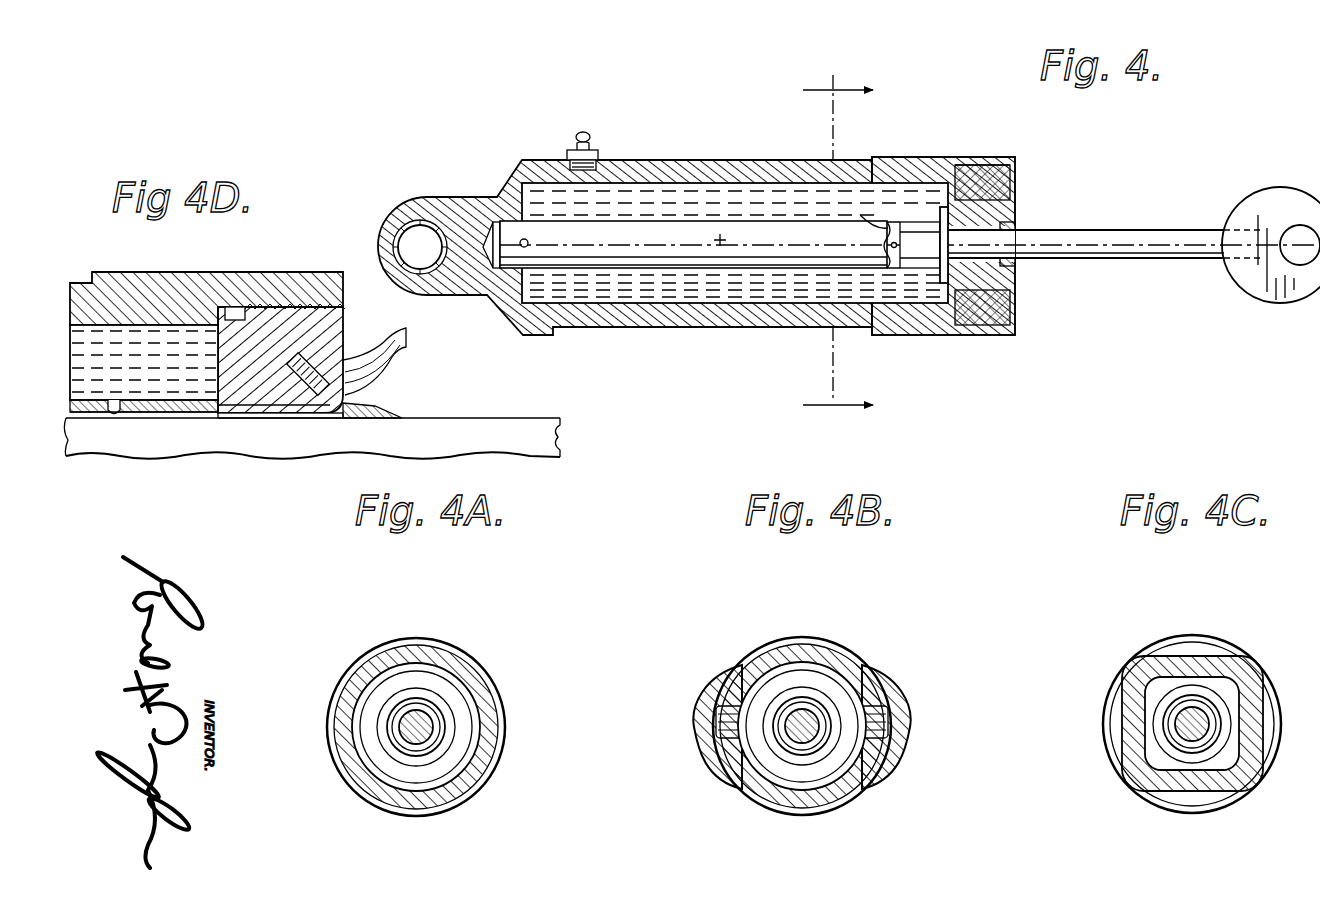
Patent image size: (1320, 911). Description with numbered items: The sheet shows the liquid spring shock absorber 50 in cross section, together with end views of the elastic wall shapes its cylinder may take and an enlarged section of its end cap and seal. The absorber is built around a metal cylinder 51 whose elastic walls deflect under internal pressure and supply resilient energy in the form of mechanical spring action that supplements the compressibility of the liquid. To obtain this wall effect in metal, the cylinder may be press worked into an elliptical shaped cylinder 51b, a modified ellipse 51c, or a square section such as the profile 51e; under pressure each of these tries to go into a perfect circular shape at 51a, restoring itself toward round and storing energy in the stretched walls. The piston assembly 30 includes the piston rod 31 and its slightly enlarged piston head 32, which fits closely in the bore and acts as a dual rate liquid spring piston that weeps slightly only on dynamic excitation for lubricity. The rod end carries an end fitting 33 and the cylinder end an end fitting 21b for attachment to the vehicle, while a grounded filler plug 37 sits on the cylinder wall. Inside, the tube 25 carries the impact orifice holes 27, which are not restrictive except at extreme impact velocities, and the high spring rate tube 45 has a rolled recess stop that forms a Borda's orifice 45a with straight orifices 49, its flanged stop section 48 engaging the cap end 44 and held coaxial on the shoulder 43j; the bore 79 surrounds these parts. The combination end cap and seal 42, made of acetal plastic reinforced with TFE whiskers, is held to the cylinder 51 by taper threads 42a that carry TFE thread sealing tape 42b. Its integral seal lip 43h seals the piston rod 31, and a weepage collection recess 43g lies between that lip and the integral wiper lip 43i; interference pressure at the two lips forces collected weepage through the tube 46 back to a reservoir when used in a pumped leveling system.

In FIG. 4, the liquid spring shock absorber 50 is at (648, 120).
In FIG. 4A, the liquid spring shock absorber 50 is at (424, 699).
In FIG. 4B, the liquid spring shock absorber 50 is at (810, 699).
In FIG. 4C, the liquid spring shock absorber 50 is at (1187, 695).
In FIG. 4, the cylinder 51 is at (918, 330).
In FIG. 4D, the cylinder 51 is at (138, 290).
In FIG. 4, the circular cross section 51a is at (637, 330).
In FIG. 4A, the elliptical shaped cylinder 51b is at (378, 660).
In FIG. 4B, the modified ellipse cylinder 51c is at (760, 668).
In FIG. 4C, the square cylinder body profile 51e is at (1150, 665).
In FIG. 4, the end cap and seal 42 is at (1035, 208).
In FIG. 4D, the end cap and seal 42 is at (370, 388).
In FIG. 4D, the taper threads 42a is at (318, 310).
In FIG. 4D, the TFE thread sealing tape 42b is at (292, 308).
In FIG. 4, the end fitting 21b is at (417, 200).
In FIG. 4, the impact orifice holes 27 is at (528, 240).
In FIG. 4, the piston assembly 30 is at (1227, 225).
In FIG. 4, the piston rod 31 is at (1128, 248).
In FIG. 4D, the piston rod 31 is at (558, 437).
In FIG. 4A, the piston rod 31 is at (432, 724).
In FIG. 4B, the piston rod 31 is at (828, 710).
In FIG. 4C, the piston rod 31 is at (1230, 708).
In FIG. 4, the piston head 32 is at (718, 242).
In FIG. 4, the end fitting 33 is at (1313, 170).
In FIG. 4, the filler plug 37 is at (572, 150).
In FIG. 4, the cap end 44 is at (980, 158).
In FIG. 4D, the cap end 44 is at (268, 305).
In FIG. 4, the high spring rate tube 45 is at (632, 284).
In FIG. 4D, the high spring rate tube 45 is at (86, 395).
In FIG. 4, the Borda's orifice 45a is at (855, 210).
In FIG. 4D, the Borda's orifice 45a is at (118, 408).
In FIG. 4D, the tube 46 is at (382, 327).
In FIG. 4, the flanged stop section 48 is at (946, 208).
In FIG. 4D, the flanged stop section 48 is at (144, 391).
In FIG. 4, the straight orifices 49 is at (893, 262).
In FIG. 4D, the straight orifices 49 is at (113, 418).
In FIG. 4, the cylinder bore 79 is at (712, 290).
In FIG. 4D, the weepage collection recess 43g is at (268, 420).
In FIG. 4D, the seal lip 43h is at (163, 420).
In FIG. 4, the wiper lip 43i is at (1030, 262).
In FIG. 4D, the wiper lip 43i is at (380, 407).
In FIG. 4D, the shoulder 43j is at (213, 420).
In FIG. 4A, the tube 25 is at (398, 710).
In FIG. 4B, the tube 25 is at (778, 697).
In FIG. 4C, the tube 25 is at (1152, 708).